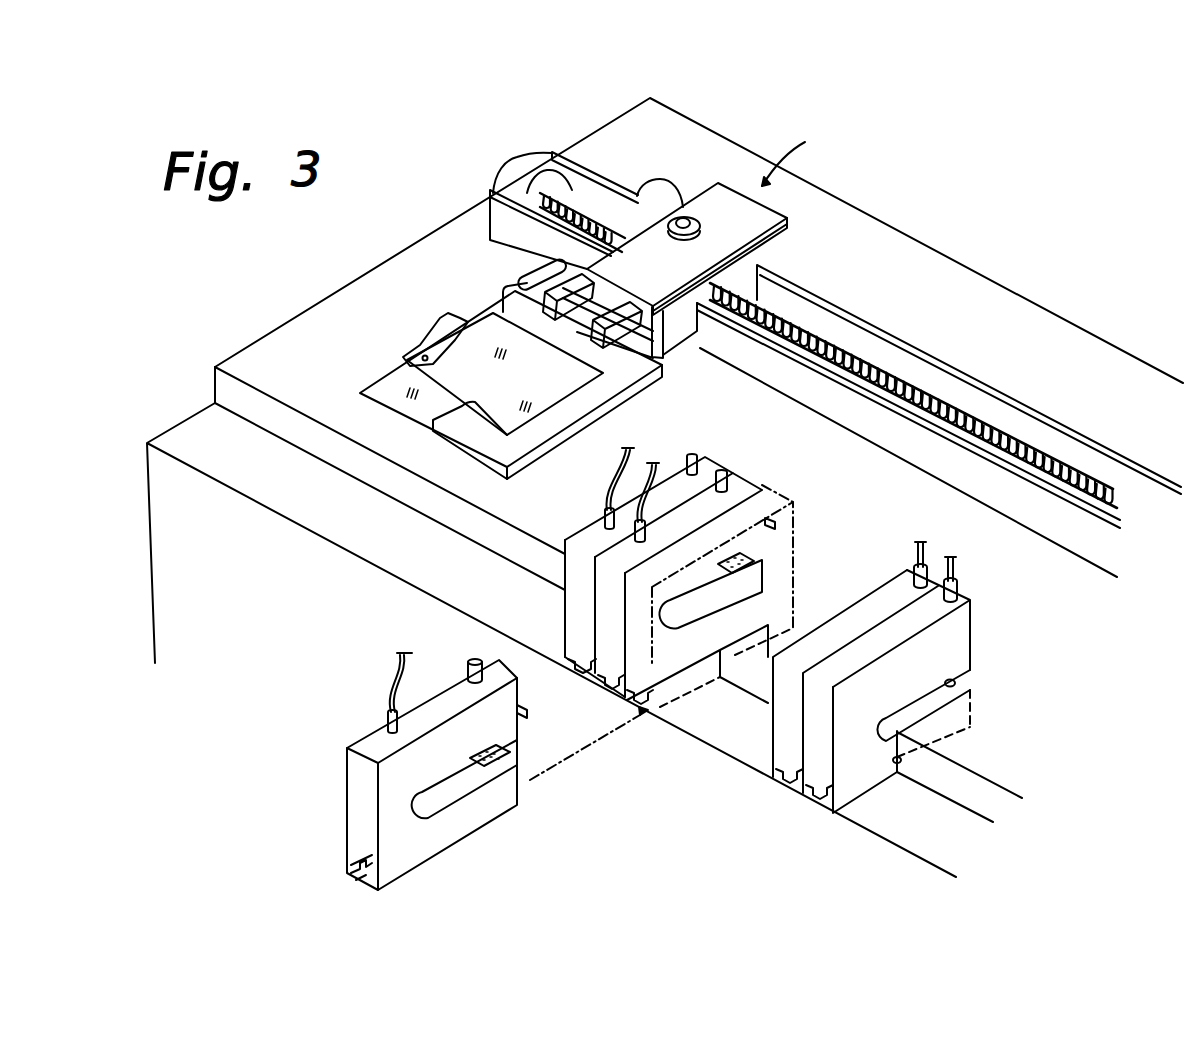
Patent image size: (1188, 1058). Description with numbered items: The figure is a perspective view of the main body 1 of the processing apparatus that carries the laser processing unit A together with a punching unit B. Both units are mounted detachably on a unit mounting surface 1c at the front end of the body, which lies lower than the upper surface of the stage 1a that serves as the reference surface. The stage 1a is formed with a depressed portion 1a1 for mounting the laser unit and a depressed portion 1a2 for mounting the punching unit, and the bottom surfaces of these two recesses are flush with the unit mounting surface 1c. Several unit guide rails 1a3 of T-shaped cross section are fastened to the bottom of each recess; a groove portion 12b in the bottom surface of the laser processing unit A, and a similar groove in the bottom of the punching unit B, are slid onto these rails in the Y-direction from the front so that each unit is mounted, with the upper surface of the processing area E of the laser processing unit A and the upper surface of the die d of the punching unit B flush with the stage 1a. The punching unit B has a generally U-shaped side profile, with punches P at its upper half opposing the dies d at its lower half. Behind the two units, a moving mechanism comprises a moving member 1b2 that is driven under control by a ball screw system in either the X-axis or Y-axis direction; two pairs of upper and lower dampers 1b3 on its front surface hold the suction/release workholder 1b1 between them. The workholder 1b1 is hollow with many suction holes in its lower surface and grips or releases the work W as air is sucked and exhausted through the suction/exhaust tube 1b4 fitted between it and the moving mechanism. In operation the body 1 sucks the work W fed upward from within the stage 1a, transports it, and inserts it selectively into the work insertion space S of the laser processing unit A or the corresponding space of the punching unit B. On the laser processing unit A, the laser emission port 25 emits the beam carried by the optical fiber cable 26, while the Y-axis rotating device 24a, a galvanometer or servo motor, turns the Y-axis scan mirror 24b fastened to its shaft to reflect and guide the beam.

The main body of processing apparatus 1 is at (926, 148).
The stage 1a is at (417, 254).
The depressed portion for mounting laser unit 1a1 is at (797, 590).
The depressed portion for mounting punching unit 1a2 is at (897, 763).
The unit guide rails 1a3 is at (817, 797).
The suction/release workholder 1b1 is at (620, 383).
The moving member 1b2 is at (762, 217).
The dampers 1b3 is at (675, 330).
The suction/exhaust tube 1b4 is at (616, 190).
The unit mounting surface 1c is at (403, 567).
The work W is at (387, 378).
The laser processing unit A is at (446, 838).
The punching unit B is at (867, 782).
The processing area E is at (513, 753).
The work insertion space S is at (458, 786).
The pins P is at (957, 588).
The die d is at (960, 680).
The groove portion 12b is at (368, 880).
The Y-axis rotating device 24a is at (469, 660).
The Y-axis scan mirror 24b is at (527, 710).
The laser emission port 25 is at (605, 508).
The optical fiber cable 26 is at (606, 496).